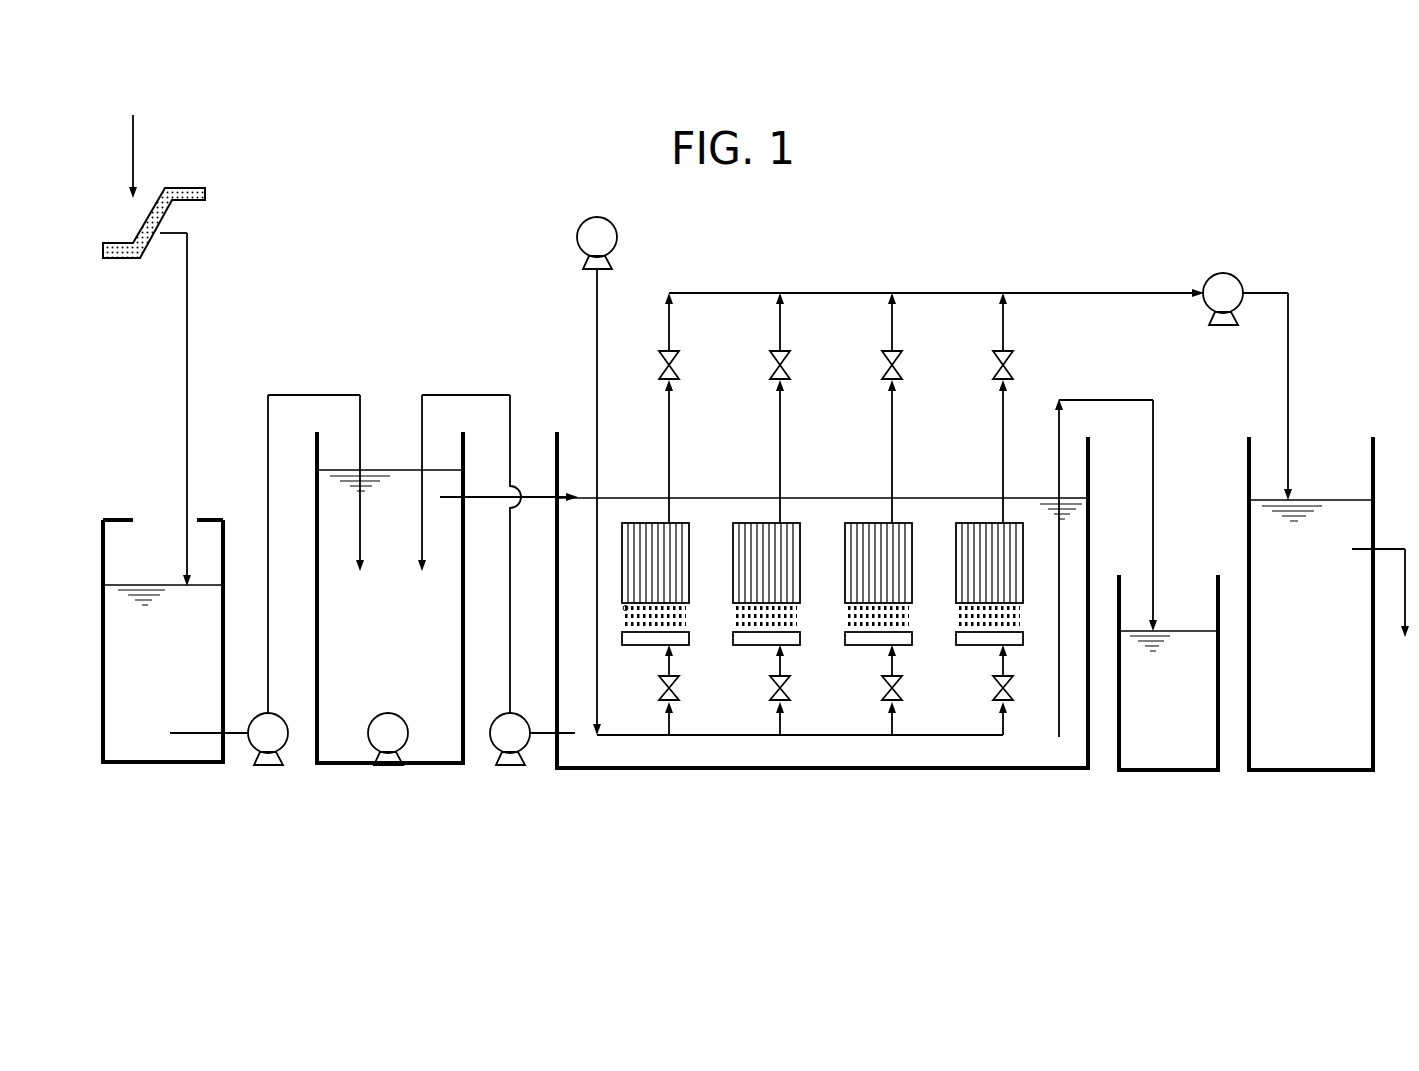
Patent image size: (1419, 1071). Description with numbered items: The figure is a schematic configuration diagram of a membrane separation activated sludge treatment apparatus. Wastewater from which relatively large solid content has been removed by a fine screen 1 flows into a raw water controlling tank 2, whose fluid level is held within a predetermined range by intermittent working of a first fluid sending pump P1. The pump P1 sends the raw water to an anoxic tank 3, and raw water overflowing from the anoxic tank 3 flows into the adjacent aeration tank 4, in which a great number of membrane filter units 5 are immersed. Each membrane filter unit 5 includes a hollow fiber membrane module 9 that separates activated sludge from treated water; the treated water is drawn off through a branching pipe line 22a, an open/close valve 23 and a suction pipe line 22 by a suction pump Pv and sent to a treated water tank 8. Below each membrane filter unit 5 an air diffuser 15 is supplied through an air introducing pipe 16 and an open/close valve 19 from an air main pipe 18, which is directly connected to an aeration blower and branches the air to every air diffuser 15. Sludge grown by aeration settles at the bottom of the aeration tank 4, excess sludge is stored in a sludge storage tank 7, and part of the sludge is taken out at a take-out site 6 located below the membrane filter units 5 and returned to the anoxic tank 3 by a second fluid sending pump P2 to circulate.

The fine screen 1 is at (193, 187).
The raw water controlling tank 2 is at (120, 505).
The anoxic tank 3 is at (425, 765).
The aeration tank 4 is at (812, 770).
The membrane filter unit 5 is at (645, 654).
The take-out site of circulated fluid 6 is at (580, 748).
The sludge storage tank 7 is at (1192, 772).
The treated water tank 8 is at (1305, 772).
The hollow fiber membrane module 9 is at (693, 588).
The air diffuser 15 is at (689, 641).
The air introducing pipe (branching pipe line) 16 is at (671, 665).
The air main pipe 18 is at (597, 350).
The open/close valve 19 is at (662, 700).
The suction pipe line 22 is at (1120, 296).
The branching pipe line 22a is at (669, 329).
The open/close valve 23 is at (665, 380).
The first fluid sending pump P1 is at (285, 743).
The second fluid sending pump P2 is at (526, 748).
The suction pump Pv is at (1247, 374).